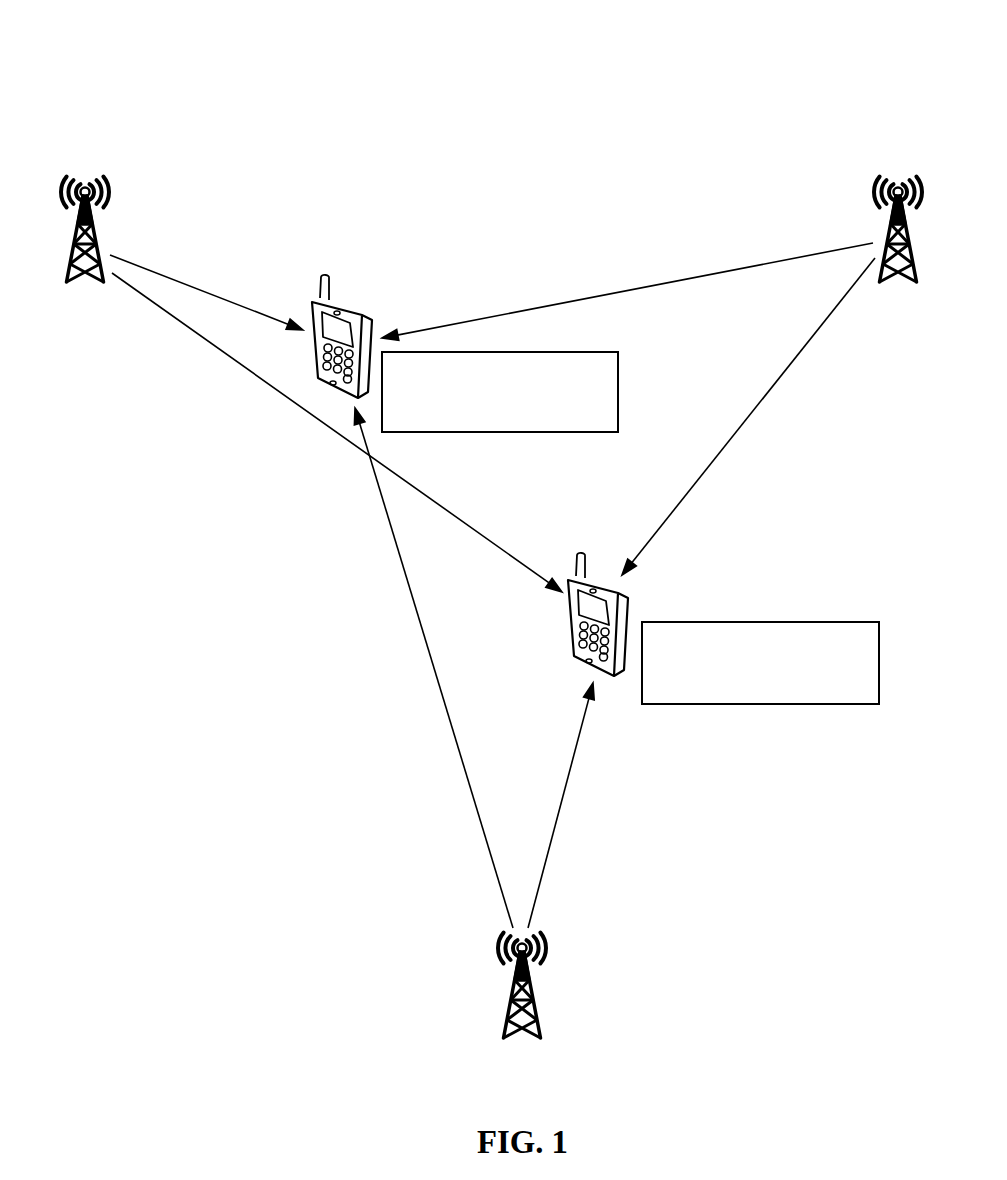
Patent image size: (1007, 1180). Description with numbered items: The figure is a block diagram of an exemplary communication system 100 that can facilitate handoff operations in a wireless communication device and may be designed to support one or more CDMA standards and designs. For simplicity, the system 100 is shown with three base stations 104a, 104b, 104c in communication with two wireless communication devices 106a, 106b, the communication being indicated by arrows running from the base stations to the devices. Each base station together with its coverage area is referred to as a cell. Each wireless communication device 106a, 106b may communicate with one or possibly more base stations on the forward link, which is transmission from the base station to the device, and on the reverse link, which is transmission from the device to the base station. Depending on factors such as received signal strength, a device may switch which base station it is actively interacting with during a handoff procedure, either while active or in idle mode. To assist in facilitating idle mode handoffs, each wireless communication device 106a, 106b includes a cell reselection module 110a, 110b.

The system 100 is at (771, 40).
The base station 104a is at (85, 186).
The base station 104b is at (898, 186).
The base station 104c is at (536, 1022).
The wireless communication device 106a is at (341, 298).
The wireless communication device 106b is at (632, 612).
The cell reselection module 110a is at (575, 416).
The cell reselection module 110b is at (837, 687).